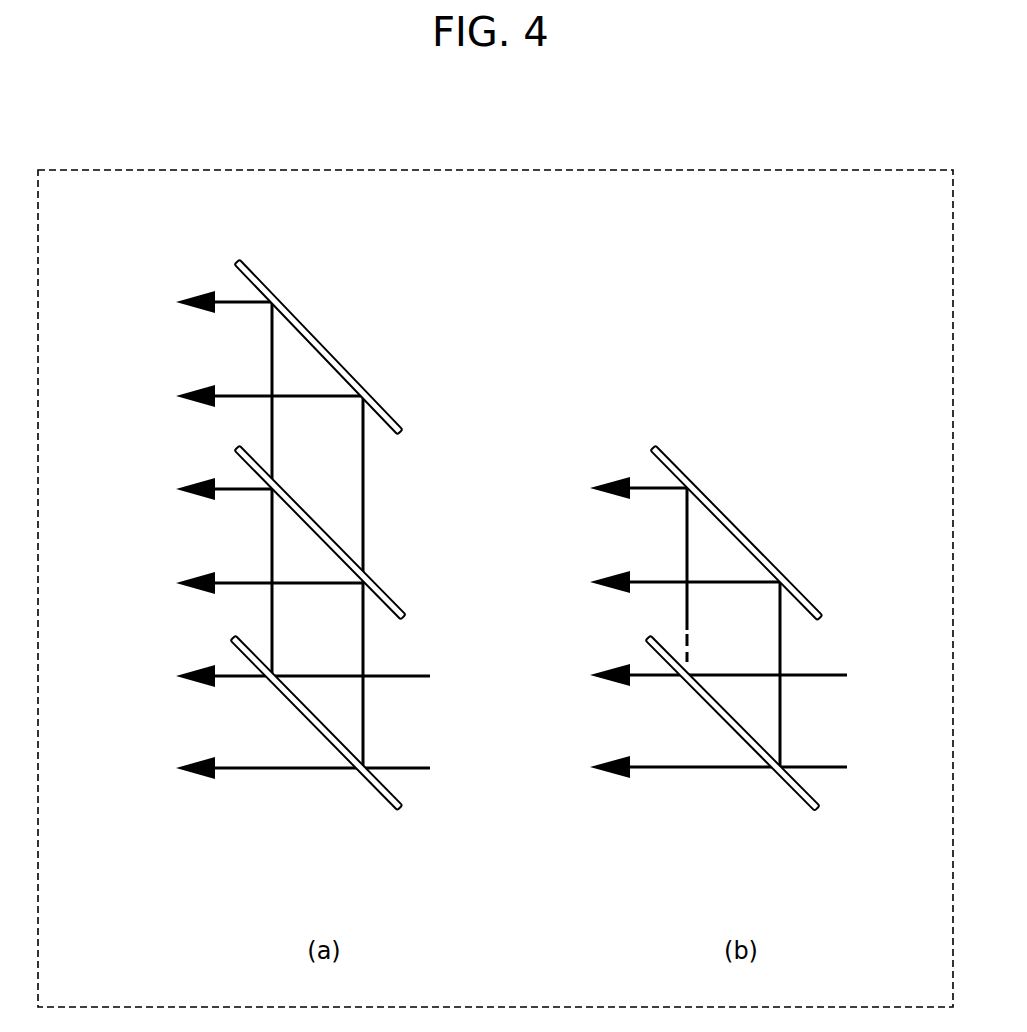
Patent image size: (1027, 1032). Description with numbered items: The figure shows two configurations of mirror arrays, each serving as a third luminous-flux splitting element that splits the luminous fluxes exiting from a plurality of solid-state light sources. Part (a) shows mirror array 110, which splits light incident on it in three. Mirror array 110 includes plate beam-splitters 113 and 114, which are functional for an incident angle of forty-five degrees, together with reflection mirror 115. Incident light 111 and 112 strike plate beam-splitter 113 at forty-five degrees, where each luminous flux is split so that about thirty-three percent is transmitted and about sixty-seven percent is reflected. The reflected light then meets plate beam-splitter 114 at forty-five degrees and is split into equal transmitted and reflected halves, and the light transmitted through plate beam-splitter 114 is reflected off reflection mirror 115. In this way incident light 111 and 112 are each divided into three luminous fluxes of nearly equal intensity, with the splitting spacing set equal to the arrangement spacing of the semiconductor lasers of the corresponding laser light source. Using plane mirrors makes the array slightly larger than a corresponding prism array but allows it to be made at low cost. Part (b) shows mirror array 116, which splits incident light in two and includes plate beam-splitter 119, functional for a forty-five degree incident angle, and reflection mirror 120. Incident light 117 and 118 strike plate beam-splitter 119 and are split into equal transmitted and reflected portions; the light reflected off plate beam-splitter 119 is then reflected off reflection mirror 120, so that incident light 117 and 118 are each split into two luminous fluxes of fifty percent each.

The mirror array 110 is at (162, 262).
The incident light 111 is at (415, 770).
The incident light 112 is at (415, 678).
The plate beam-splitter 113 is at (367, 783).
The plate beam-splitter 114 is at (390, 597).
The reflection mirror 115 is at (390, 412).
The mirror array 116 is at (643, 432).
The incident light 117 is at (830, 770).
The incident light 118 is at (830, 677).
The plate beam-splitter 119 is at (785, 783).
The reflection mirror 120 is at (808, 595).